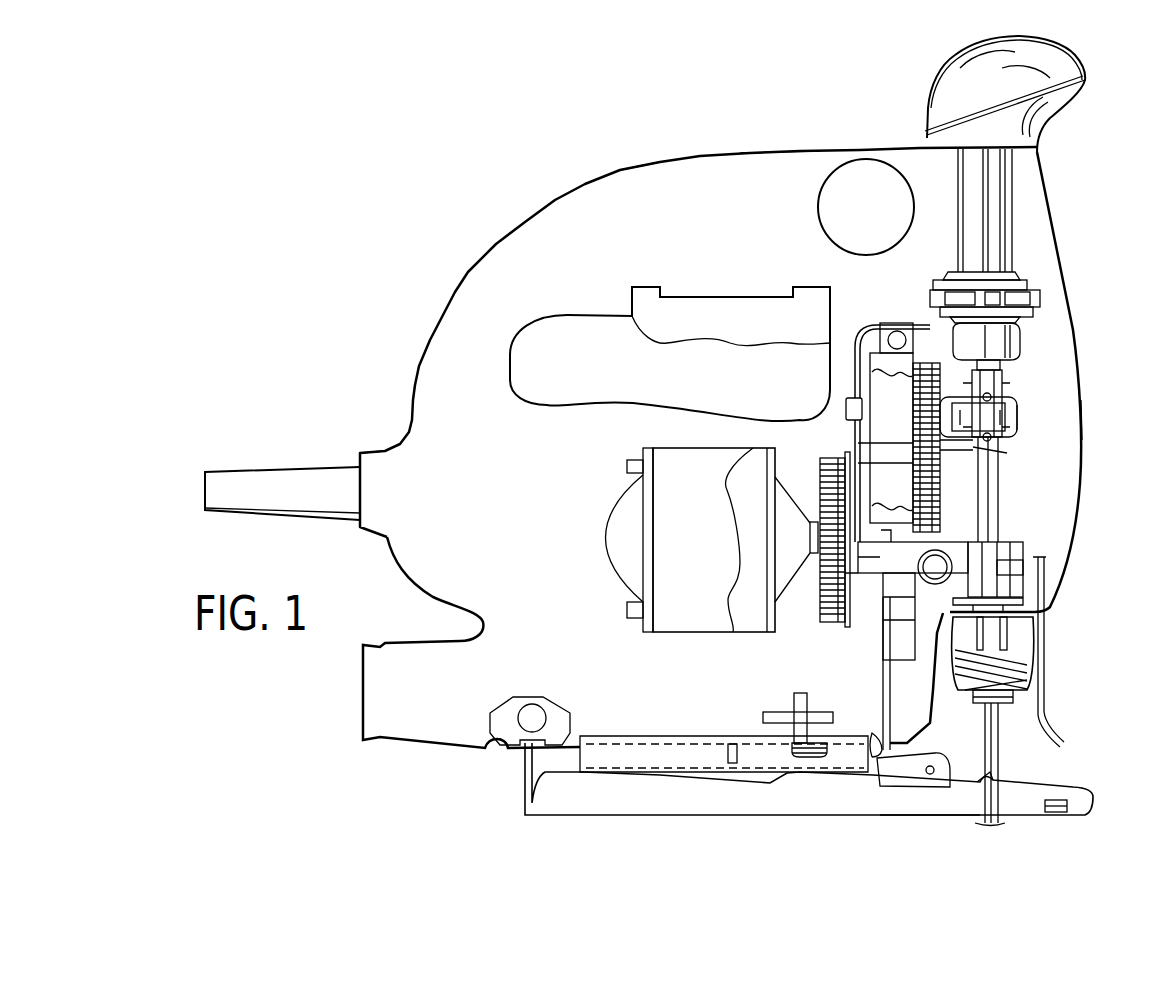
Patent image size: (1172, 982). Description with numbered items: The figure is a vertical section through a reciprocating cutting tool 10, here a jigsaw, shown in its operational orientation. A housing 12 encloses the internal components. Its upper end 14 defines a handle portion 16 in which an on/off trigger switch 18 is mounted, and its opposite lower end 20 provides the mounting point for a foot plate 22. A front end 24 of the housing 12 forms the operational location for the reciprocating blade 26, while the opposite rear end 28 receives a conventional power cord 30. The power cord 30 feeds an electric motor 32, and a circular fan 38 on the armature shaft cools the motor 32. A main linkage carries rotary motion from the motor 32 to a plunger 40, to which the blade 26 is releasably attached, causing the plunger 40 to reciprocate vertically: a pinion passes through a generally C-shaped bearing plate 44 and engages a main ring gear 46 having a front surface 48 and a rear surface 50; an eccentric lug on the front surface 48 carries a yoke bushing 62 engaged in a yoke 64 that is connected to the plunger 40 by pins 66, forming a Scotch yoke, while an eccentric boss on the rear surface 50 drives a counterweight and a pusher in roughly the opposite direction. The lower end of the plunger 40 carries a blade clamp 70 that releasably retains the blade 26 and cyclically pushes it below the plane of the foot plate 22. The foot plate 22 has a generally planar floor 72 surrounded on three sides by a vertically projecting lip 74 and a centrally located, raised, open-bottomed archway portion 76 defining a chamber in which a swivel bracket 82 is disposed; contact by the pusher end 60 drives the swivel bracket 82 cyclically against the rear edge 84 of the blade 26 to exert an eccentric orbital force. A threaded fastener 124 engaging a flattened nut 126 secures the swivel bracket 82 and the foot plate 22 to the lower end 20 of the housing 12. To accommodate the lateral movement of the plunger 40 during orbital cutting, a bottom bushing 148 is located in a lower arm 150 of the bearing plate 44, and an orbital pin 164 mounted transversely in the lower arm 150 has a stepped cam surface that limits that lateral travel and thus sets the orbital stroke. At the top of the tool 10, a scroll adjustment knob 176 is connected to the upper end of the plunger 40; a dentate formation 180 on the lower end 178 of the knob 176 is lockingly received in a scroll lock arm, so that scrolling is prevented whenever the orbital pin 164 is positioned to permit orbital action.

The reciprocating cutting tool 10 is at (447, 204).
The housing 12 is at (1053, 207).
The upper end 14 is at (780, 152).
The handle portion 16 is at (660, 207).
The on/off trigger switch 18 is at (687, 330).
The lower end 20 is at (500, 750).
The foot plate 22 is at (722, 808).
The front end 24 is at (1083, 410).
The reciprocating blade 26 is at (995, 740).
The rear end 28 is at (380, 452).
The power cord 30 is at (257, 482).
The electric motor 32 is at (705, 550).
The circular fan 38 is at (830, 627).
The plunger 40 is at (990, 508).
The bearing plate 44 is at (873, 323).
The main ring gear 46 is at (933, 323).
The front surface 48 is at (940, 497).
The rear surface 50 is at (905, 375).
The pusher end 60 is at (873, 755).
The yoke bushing 62 is at (975, 420).
The yoke 64 is at (1017, 423).
The pins 66 is at (1007, 453).
The blade clamp 70 is at (1025, 633).
The floor 72 is at (930, 817).
The lip 74 is at (1085, 798).
The archway portion 76 is at (625, 745).
The swivel bracket 82 is at (945, 752).
The rear edge 84 is at (987, 763).
The threaded fastener 124 is at (800, 695).
The nut 126 is at (760, 720).
The bottom bushing 148 is at (1003, 537).
The lower arm 150 is at (877, 587).
The orbital pin 164 is at (937, 633).
The scroll adjustment knob 176 is at (997, 230).
The lower end 178 is at (1027, 303).
The dentate formation 180 is at (1077, 320).